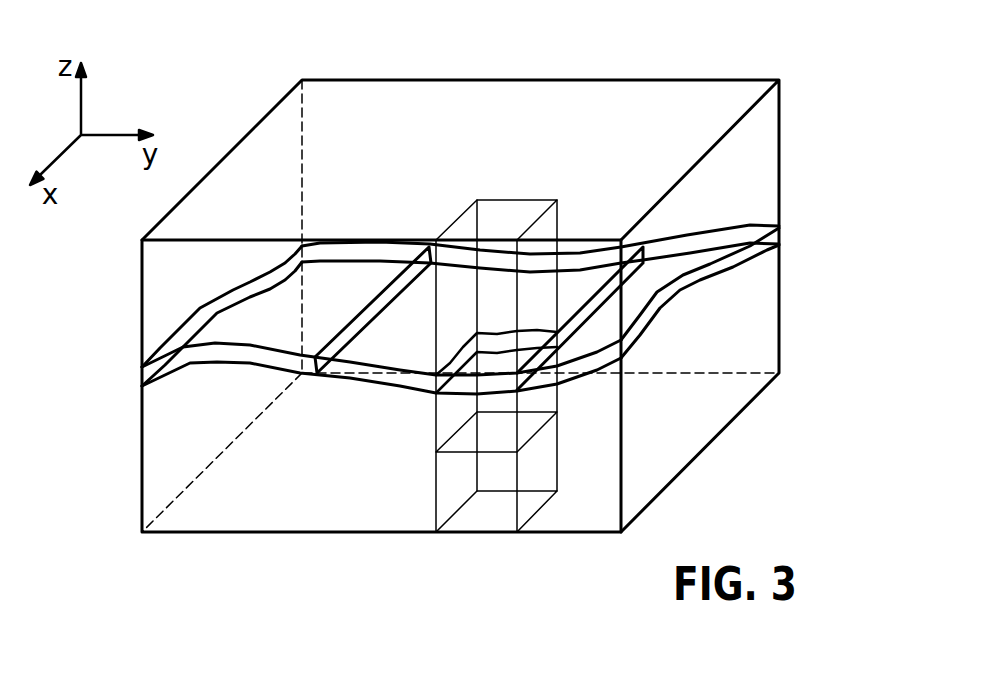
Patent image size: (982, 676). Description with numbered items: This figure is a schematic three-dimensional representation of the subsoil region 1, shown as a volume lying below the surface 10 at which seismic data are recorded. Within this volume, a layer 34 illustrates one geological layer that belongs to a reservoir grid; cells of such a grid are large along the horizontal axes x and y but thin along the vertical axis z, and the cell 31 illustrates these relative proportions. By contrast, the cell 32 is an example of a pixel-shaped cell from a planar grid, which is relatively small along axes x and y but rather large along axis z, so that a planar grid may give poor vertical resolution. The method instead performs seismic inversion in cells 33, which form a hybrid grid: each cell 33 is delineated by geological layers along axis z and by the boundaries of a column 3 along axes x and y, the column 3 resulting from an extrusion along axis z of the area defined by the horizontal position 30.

The subsoil region 1 is at (268, 104).
The surface 10 is at (716, 100).
The column 3 is at (514, 200).
The horizontal position 30 is at (467, 226).
The cell of reservoir grid 31 is at (222, 328).
The cell of planar grid 32 is at (493, 512).
The cell 33 is at (493, 385).
The layer 34 is at (688, 298).